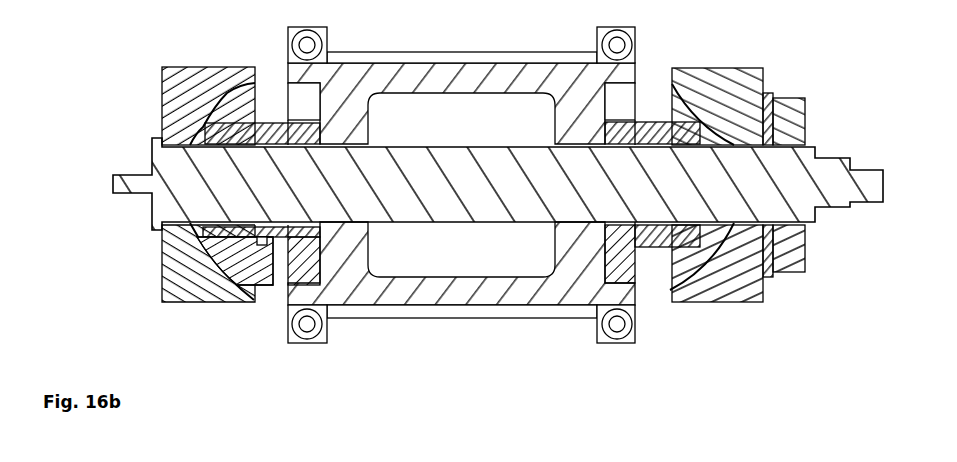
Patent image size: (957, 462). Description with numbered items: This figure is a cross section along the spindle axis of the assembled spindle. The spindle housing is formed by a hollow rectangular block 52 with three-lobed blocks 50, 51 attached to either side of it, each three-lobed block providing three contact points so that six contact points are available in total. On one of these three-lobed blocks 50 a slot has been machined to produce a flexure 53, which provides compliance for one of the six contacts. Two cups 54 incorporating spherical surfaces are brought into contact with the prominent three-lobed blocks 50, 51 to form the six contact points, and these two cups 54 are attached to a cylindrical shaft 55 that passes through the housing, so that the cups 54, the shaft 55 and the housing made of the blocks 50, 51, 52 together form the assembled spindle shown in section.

The three-lobed block 50 is at (262, 134).
The three-lobed block 51 is at (663, 127).
The hollow rectangular block 52 is at (347, 88).
The flexure 53 is at (265, 249).
The cup 54 is at (182, 95).
The cylindrical shaft 55 is at (820, 195).